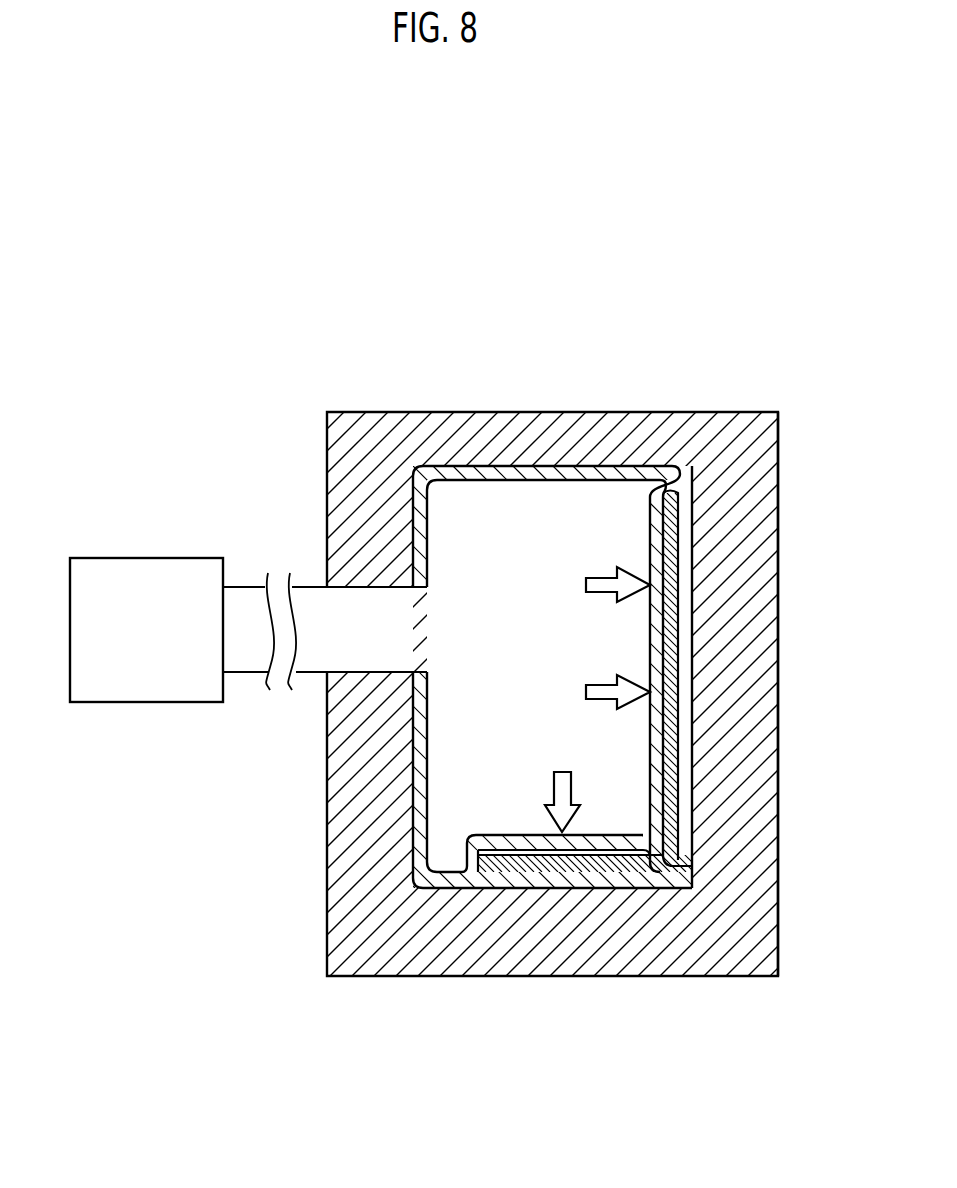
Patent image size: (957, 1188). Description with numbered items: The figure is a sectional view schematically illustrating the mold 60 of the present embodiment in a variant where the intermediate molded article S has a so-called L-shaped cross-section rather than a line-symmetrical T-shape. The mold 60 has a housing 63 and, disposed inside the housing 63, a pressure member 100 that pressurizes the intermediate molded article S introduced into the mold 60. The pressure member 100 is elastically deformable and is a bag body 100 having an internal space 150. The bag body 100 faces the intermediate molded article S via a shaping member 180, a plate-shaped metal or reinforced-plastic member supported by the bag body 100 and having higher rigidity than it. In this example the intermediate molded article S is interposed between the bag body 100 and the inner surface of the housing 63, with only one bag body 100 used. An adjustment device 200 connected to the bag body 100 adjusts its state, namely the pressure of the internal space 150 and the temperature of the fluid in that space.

The mold 60 is at (685, 393).
The housing 63 is at (779, 492).
The pressure member 100 is at (483, 467).
The internal space 150 is at (500, 638).
The shaping member 180 is at (663, 625).
The adjustment device 200 is at (176, 557).
The intermediate molded article S is at (702, 578).